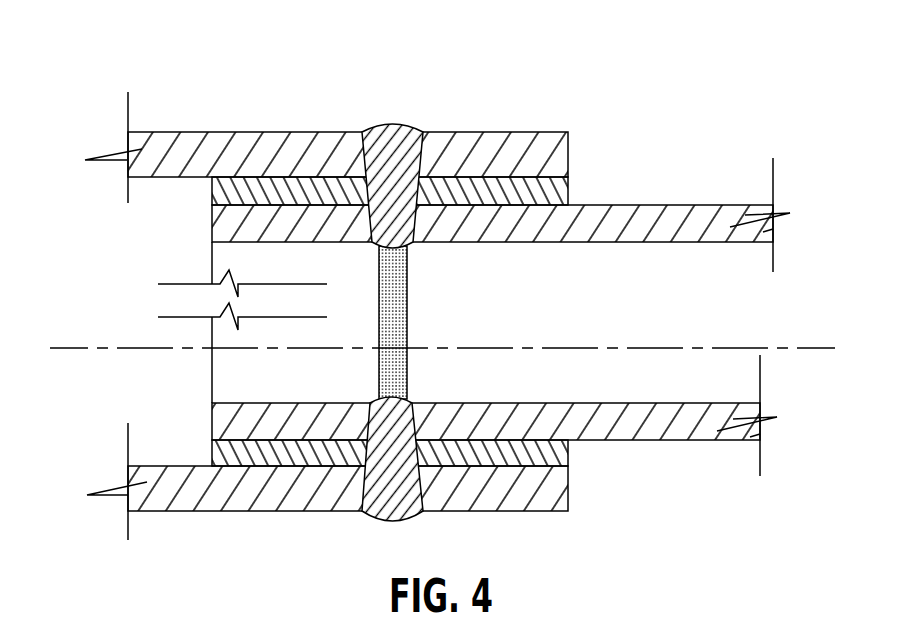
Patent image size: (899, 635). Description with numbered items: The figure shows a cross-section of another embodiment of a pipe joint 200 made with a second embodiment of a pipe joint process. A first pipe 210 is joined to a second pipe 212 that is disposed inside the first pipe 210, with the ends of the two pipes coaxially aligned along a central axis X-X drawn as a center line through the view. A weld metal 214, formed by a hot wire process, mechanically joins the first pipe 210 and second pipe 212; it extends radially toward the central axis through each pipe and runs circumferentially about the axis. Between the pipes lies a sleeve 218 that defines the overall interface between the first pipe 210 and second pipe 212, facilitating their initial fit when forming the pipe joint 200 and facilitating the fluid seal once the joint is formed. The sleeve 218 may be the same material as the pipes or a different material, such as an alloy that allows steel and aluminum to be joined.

The pipe joint 200 is at (692, 69).
The first pipe 210 is at (213, 132).
The second pipe 212 is at (668, 203).
The weld metal 214 is at (390, 128).
The sleeve 218 is at (560, 186).